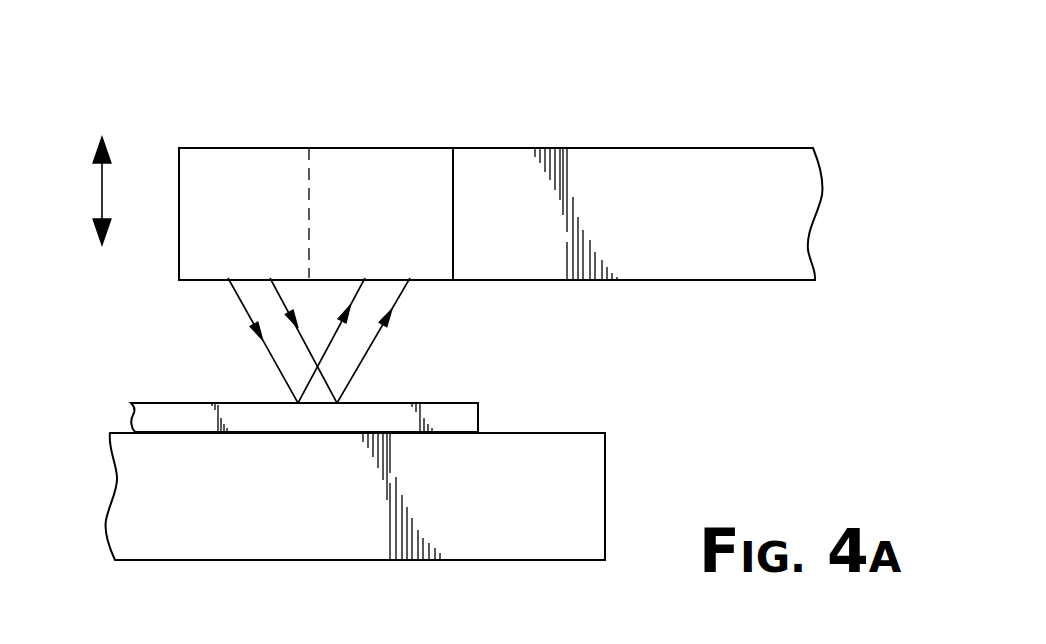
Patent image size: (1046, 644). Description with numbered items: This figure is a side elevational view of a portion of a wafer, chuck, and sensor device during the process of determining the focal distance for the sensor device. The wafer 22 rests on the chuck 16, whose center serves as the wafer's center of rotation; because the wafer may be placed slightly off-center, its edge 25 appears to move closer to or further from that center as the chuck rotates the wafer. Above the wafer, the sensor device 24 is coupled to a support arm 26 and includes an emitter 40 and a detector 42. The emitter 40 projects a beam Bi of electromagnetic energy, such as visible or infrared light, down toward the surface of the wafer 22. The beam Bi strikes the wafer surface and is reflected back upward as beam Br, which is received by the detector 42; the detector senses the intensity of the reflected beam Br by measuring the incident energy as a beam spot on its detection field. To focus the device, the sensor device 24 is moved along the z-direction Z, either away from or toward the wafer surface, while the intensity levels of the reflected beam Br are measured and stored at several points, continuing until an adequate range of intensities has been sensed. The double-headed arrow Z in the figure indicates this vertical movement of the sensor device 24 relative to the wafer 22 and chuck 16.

The sensor device 24 is at (279, 61).
The emitter 40 is at (253, 148).
The detector 42 is at (378, 148).
The support arm 26 is at (667, 162).
The wafer 22 is at (448, 403).
The edge 25 is at (480, 422).
The chuck 16 is at (605, 498).
The z-direction Z is at (101, 190).
The incident beam Bi is at (263, 312).
The reflected beam Br is at (357, 338).